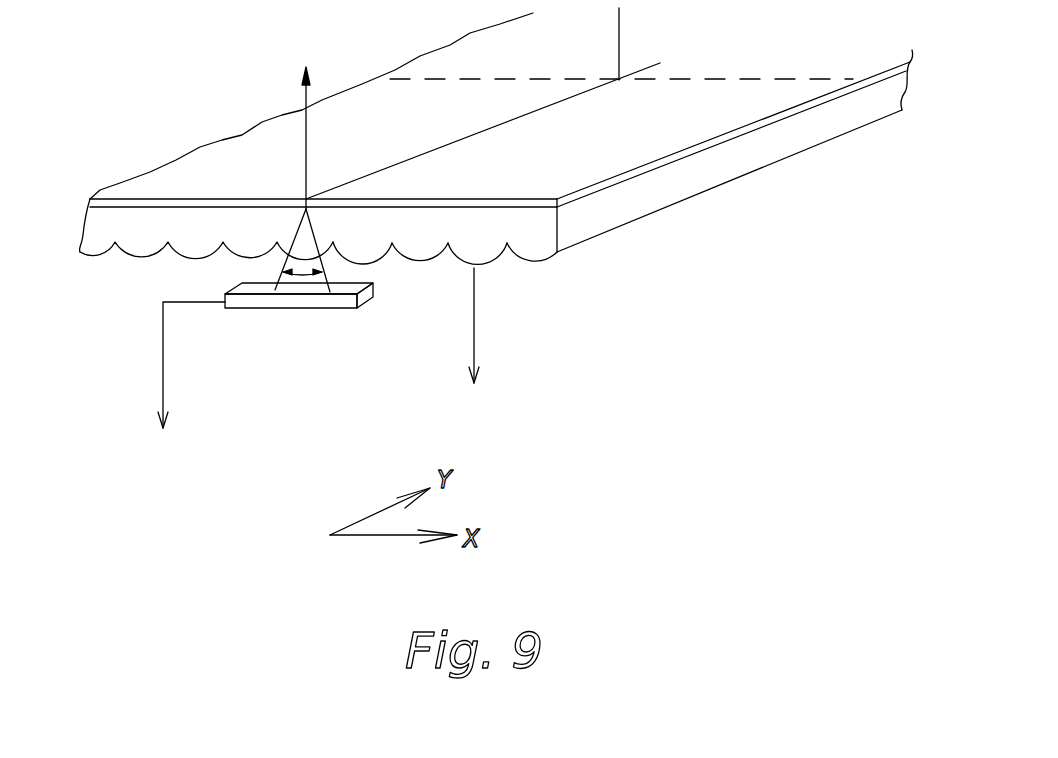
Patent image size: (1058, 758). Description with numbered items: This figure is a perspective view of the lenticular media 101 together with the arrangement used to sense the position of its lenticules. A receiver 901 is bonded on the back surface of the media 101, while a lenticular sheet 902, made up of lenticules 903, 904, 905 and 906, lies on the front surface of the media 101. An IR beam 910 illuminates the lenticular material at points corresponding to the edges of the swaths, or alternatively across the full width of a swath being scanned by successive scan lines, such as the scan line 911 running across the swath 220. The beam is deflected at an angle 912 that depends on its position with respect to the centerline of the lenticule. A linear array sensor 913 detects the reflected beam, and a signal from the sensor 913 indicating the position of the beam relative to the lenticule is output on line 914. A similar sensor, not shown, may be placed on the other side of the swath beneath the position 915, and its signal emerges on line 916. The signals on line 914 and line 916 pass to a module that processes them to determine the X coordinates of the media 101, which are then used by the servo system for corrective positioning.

The media 101 is at (198, 85).
The swath 220 is at (742, 102).
The receiver 901 is at (508, 193).
The lenticular sheet 902 is at (602, 210).
The lenticule 903 is at (530, 260).
The lenticule 904 is at (493, 260).
The lenticule 905 is at (427, 260).
The lenticule 906 is at (370, 260).
The IR beam 910 is at (306, 150).
The scan line 911 is at (513, 120).
The angle 912 is at (278, 287).
The linear array sensor 913 is at (318, 308).
The line 914 is at (158, 383).
The position 915 is at (620, 47).
The line 916 is at (480, 333).